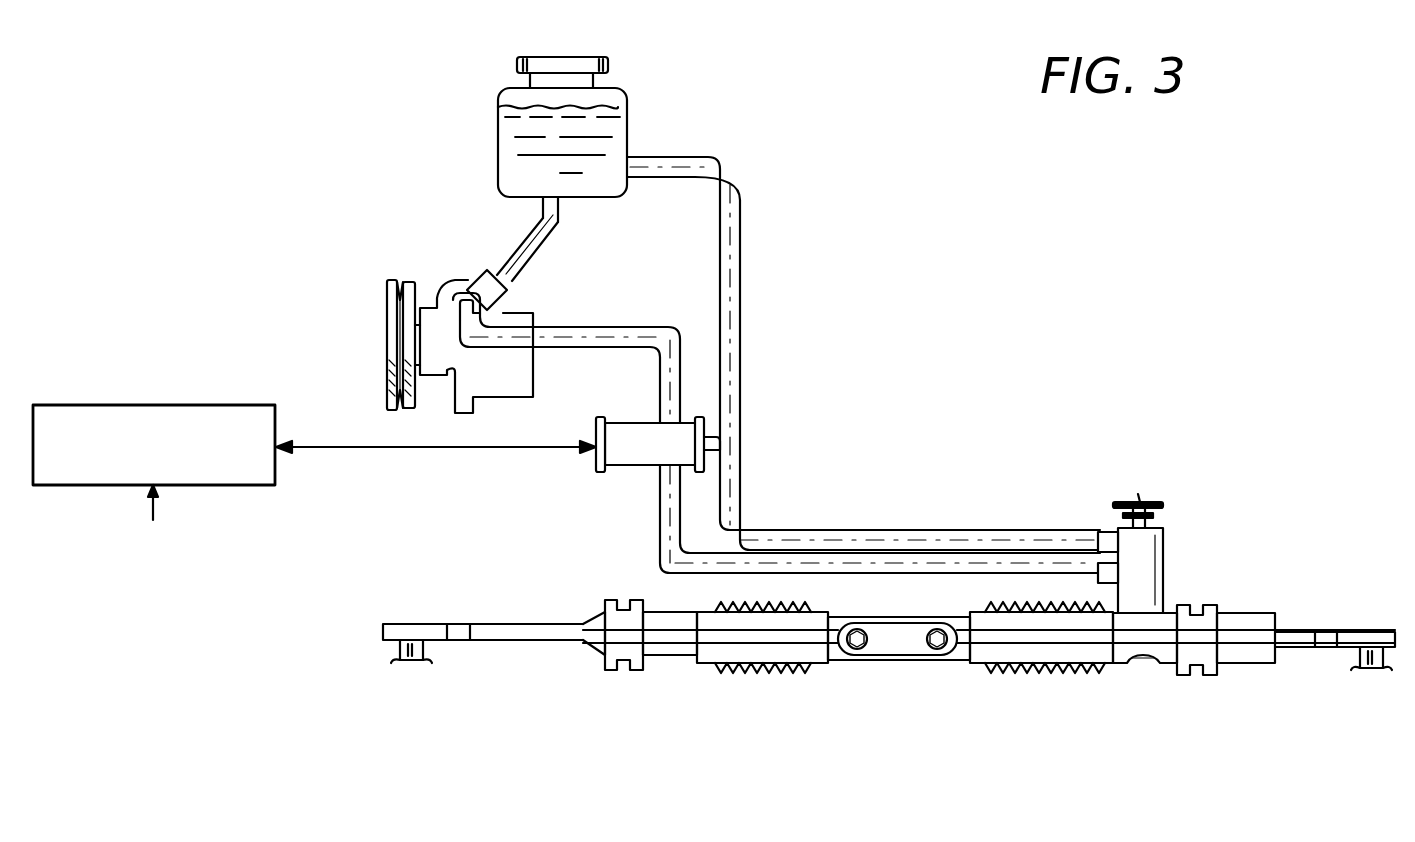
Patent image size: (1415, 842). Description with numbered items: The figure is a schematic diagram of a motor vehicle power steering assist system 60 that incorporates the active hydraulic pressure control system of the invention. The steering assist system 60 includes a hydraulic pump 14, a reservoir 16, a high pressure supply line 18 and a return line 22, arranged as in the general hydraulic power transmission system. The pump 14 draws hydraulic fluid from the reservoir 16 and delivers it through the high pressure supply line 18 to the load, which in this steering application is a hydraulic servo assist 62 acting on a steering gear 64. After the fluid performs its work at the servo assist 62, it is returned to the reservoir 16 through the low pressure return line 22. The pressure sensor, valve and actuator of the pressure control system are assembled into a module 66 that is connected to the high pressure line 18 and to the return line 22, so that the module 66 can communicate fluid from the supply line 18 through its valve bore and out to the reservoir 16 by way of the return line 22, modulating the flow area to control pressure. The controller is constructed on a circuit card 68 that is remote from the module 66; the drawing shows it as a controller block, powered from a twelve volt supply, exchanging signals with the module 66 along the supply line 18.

The hydraulic pump 14 is at (470, 279).
The reservoir 16 is at (627, 120).
The high pressure supply line 18 is at (590, 327).
The return line 22 is at (738, 308).
The motor vehicle power steering assist system 60 is at (882, 410).
The hydraulic servo assist 62 is at (1145, 556).
The steering gear 64 is at (917, 663).
The module 66 is at (620, 474).
The circuit card 68 is at (170, 405).